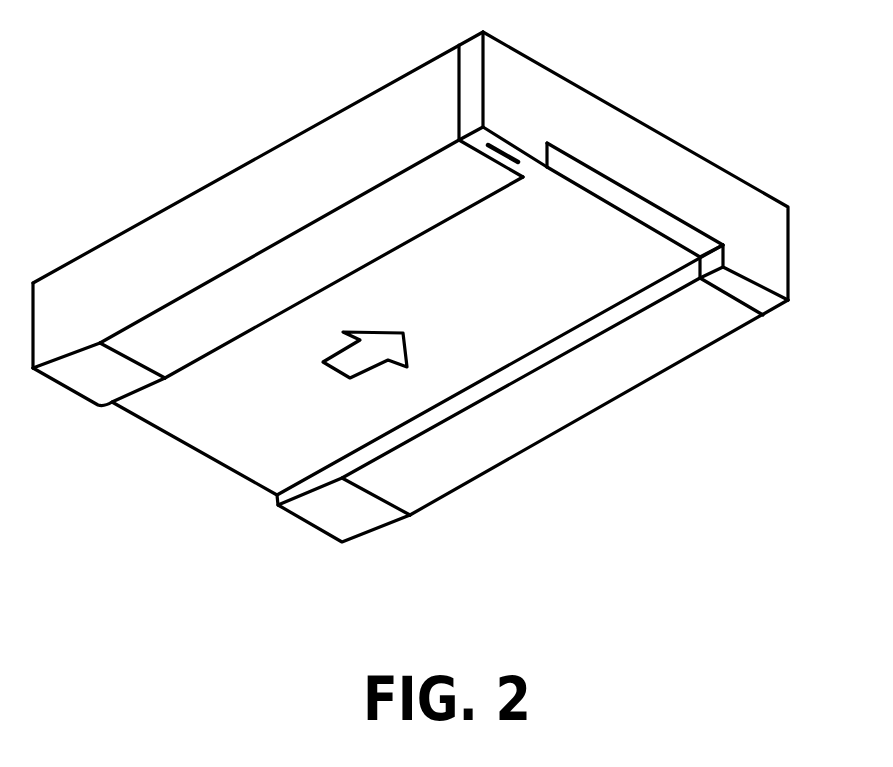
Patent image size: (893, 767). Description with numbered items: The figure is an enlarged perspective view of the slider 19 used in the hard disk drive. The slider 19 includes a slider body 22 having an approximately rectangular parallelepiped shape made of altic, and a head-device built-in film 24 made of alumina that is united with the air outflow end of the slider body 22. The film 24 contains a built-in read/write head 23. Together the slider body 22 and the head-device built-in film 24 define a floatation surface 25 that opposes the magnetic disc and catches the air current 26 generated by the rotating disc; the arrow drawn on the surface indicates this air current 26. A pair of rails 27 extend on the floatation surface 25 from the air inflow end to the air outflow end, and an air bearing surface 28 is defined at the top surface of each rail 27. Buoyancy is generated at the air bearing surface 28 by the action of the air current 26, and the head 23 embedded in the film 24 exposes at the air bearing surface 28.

The slider 19 is at (258, 148).
The slider body 22 is at (748, 322).
The read/write head 23 is at (498, 153).
The head-device built-in film 24 is at (797, 222).
The floatation surface 25 is at (475, 313).
The air current 26 is at (338, 375).
The rails 27 is at (220, 350).
The air bearing surface (ABS) 28 is at (465, 200).